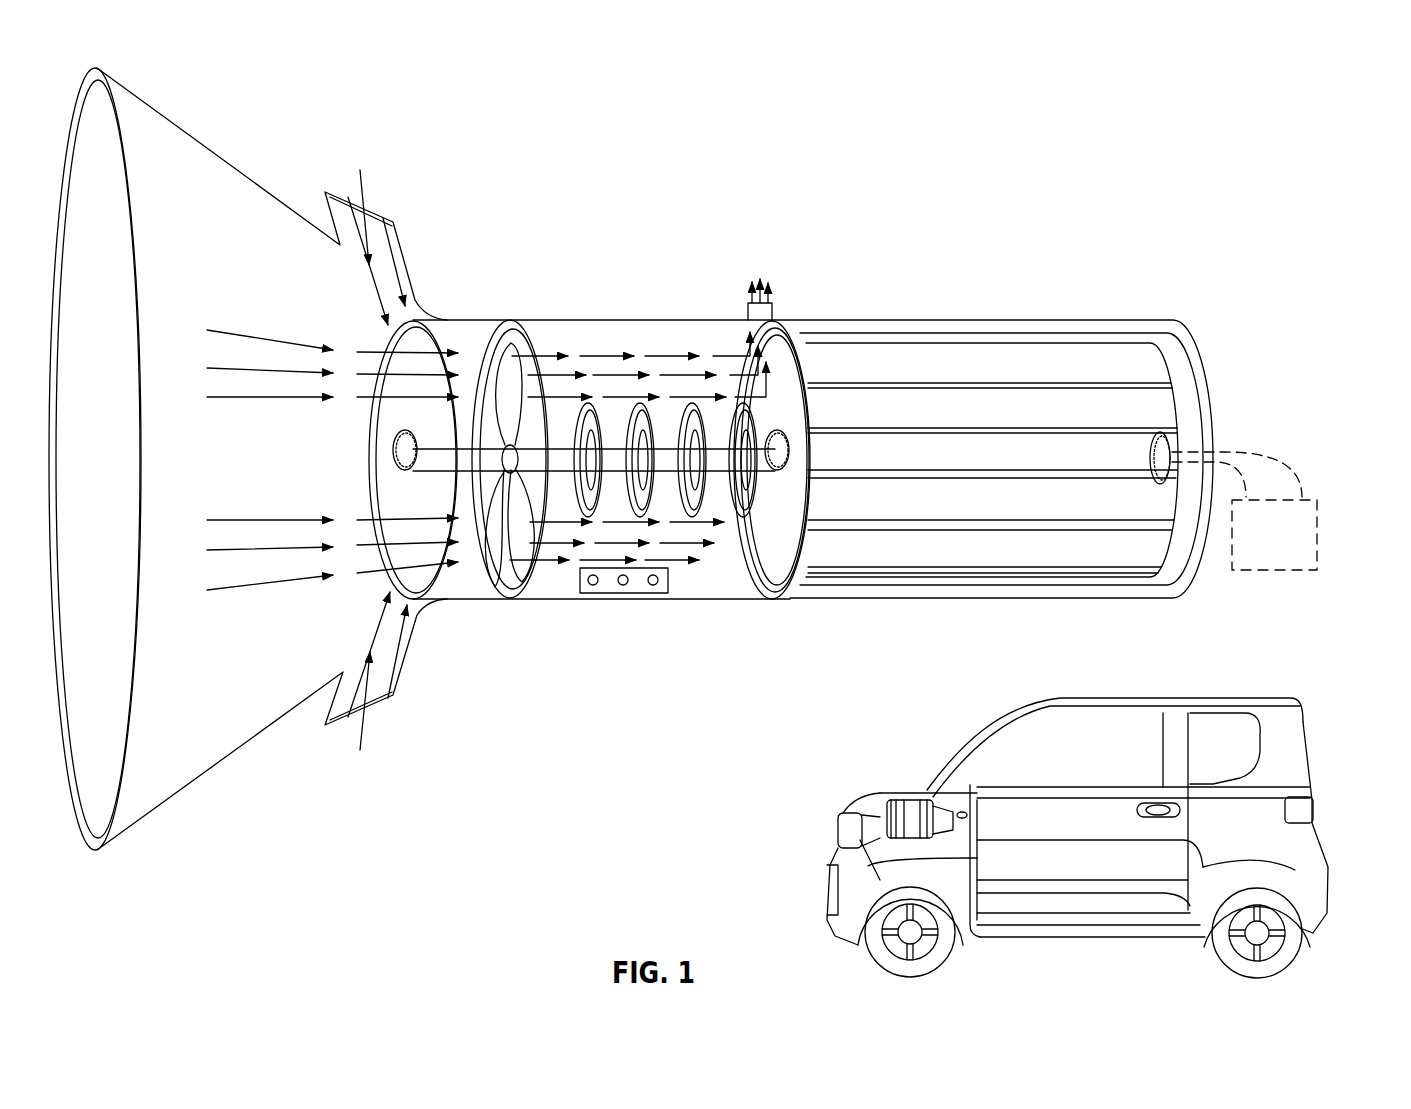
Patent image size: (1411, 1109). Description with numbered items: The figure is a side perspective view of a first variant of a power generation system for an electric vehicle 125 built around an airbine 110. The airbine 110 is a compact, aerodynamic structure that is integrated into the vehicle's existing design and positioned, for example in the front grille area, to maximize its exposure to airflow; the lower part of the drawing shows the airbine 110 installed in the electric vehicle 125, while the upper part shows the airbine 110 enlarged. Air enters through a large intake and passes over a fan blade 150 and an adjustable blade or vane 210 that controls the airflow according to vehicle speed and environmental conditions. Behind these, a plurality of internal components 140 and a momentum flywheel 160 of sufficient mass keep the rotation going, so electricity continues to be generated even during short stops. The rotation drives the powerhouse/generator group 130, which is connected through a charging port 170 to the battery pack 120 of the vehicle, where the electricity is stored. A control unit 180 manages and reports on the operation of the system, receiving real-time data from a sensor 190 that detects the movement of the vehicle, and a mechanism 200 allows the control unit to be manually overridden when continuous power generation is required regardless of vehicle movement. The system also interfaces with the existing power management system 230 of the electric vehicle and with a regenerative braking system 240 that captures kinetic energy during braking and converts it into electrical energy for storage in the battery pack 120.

The airbine 110 is at (683, 459).
The battery pack 120 is at (1262, 572).
The electric vehicle 125 is at (1310, 753).
The powerhouse/generator group 130 is at (928, 320).
The plurality of internal components 140 is at (648, 322).
The fan blade 150 is at (531, 427).
The momentum flywheel 160 is at (780, 358).
The charging port 170 is at (1257, 457).
The control unit 180 is at (609, 618).
The sensor 190 is at (609, 618).
The mechanism to manually override the control unit 200 is at (623, 595).
The adjustable blade or vane 210 is at (515, 350).
The existing power management system of the electric vehicle 230 is at (459, 459).
The regenerative braking system 240 is at (870, 796).